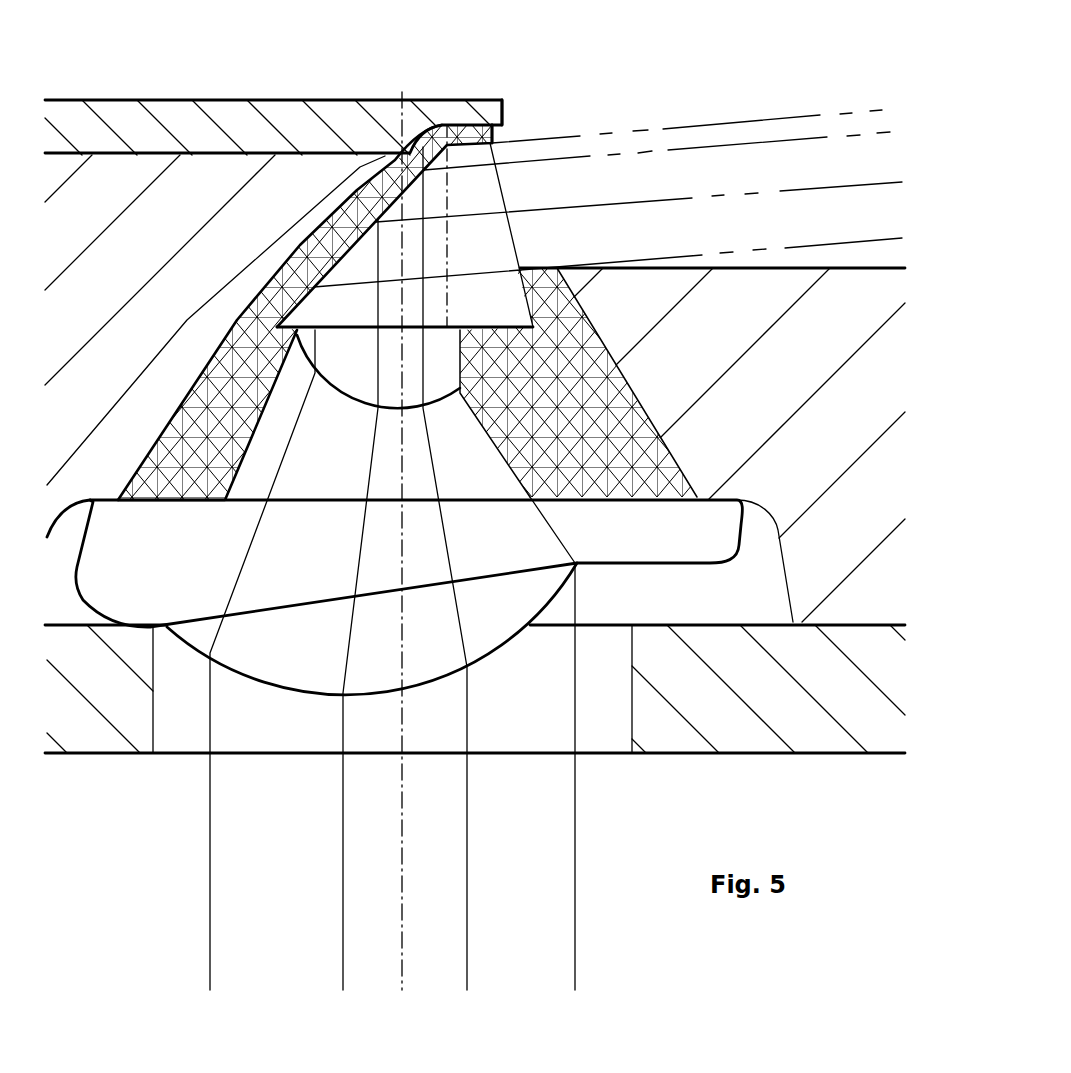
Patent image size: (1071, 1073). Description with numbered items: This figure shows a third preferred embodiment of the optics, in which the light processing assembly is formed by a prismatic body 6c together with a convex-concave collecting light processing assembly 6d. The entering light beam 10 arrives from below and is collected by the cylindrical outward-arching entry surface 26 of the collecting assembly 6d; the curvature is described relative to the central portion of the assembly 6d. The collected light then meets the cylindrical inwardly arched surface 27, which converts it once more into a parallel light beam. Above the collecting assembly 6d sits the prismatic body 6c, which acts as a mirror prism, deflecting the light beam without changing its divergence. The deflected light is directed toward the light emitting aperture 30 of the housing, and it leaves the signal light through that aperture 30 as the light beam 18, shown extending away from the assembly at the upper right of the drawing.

The prismatic body 6c is at (502, 317).
The convex-concave collecting light processing assembly 6d is at (648, 553).
The entering light beam 10 is at (212, 800).
The light beam 18 is at (562, 136).
The cylindrical outward-arching entry surface 26 is at (270, 686).
The cylindrical inwardly arched surface 27 is at (338, 389).
The light emitting aperture 30 is at (504, 139).